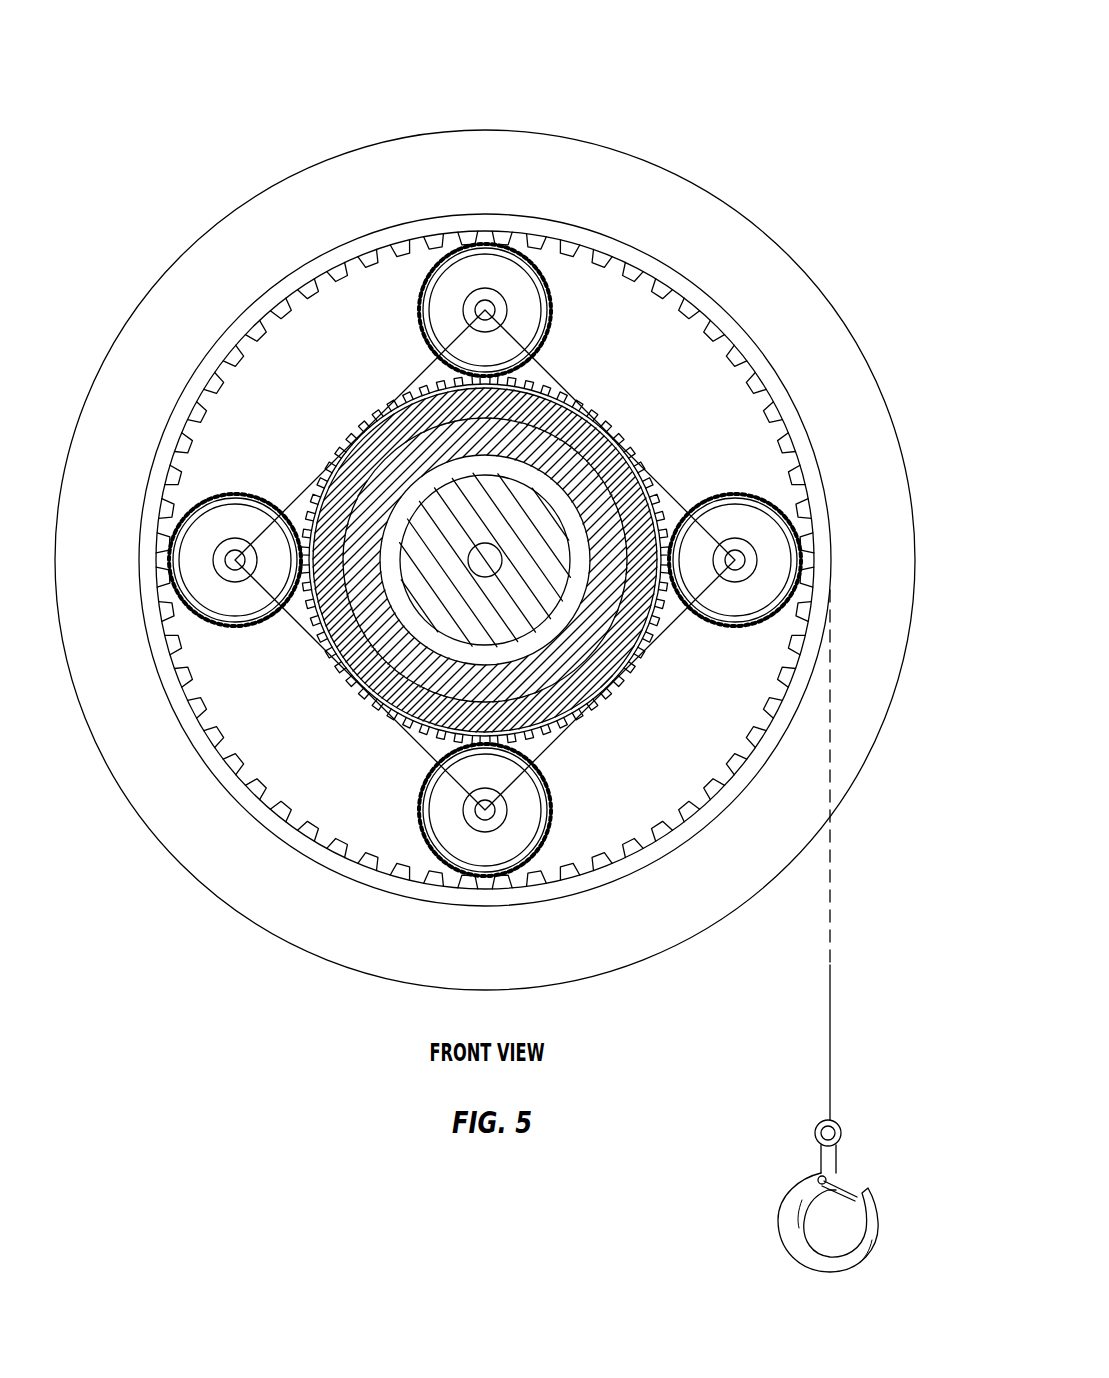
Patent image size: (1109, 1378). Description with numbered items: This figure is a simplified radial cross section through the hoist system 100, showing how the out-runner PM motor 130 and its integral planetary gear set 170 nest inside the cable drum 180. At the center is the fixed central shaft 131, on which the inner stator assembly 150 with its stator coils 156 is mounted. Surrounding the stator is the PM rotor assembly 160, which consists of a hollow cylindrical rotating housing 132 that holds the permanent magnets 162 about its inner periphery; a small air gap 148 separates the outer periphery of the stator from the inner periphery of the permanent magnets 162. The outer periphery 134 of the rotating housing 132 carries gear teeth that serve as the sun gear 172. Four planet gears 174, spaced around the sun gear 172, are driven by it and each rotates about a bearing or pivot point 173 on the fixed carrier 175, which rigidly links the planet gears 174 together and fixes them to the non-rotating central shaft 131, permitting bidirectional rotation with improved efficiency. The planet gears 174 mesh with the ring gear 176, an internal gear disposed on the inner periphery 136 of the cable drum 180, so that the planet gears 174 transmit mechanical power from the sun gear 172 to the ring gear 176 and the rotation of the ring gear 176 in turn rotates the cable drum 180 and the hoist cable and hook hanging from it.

The hoist system 100 is at (795, 81).
The PM motor 130 is at (717, 181).
The fixed central shaft 131 is at (465, 618).
The rotating housing 132 is at (637, 602).
The outer periphery 134 is at (372, 695).
The inner periphery 136 is at (333, 235).
The air gap 148 is at (503, 660).
The stator assembly 150 is at (615, 124).
The stator coils 156 is at (487, 542).
The PM rotor assembly 160 is at (612, 650).
The permanent magnets 162 is at (567, 660).
The planetary gear set 170 is at (898, 294).
The sun gear 172 is at (619, 447).
The pivot points 173 is at (469, 358).
The planet gears 174 is at (469, 287).
The fixed carrier 175 is at (402, 383).
The ring gear 176 is at (688, 308).
The cable drum 180 is at (468, 181).